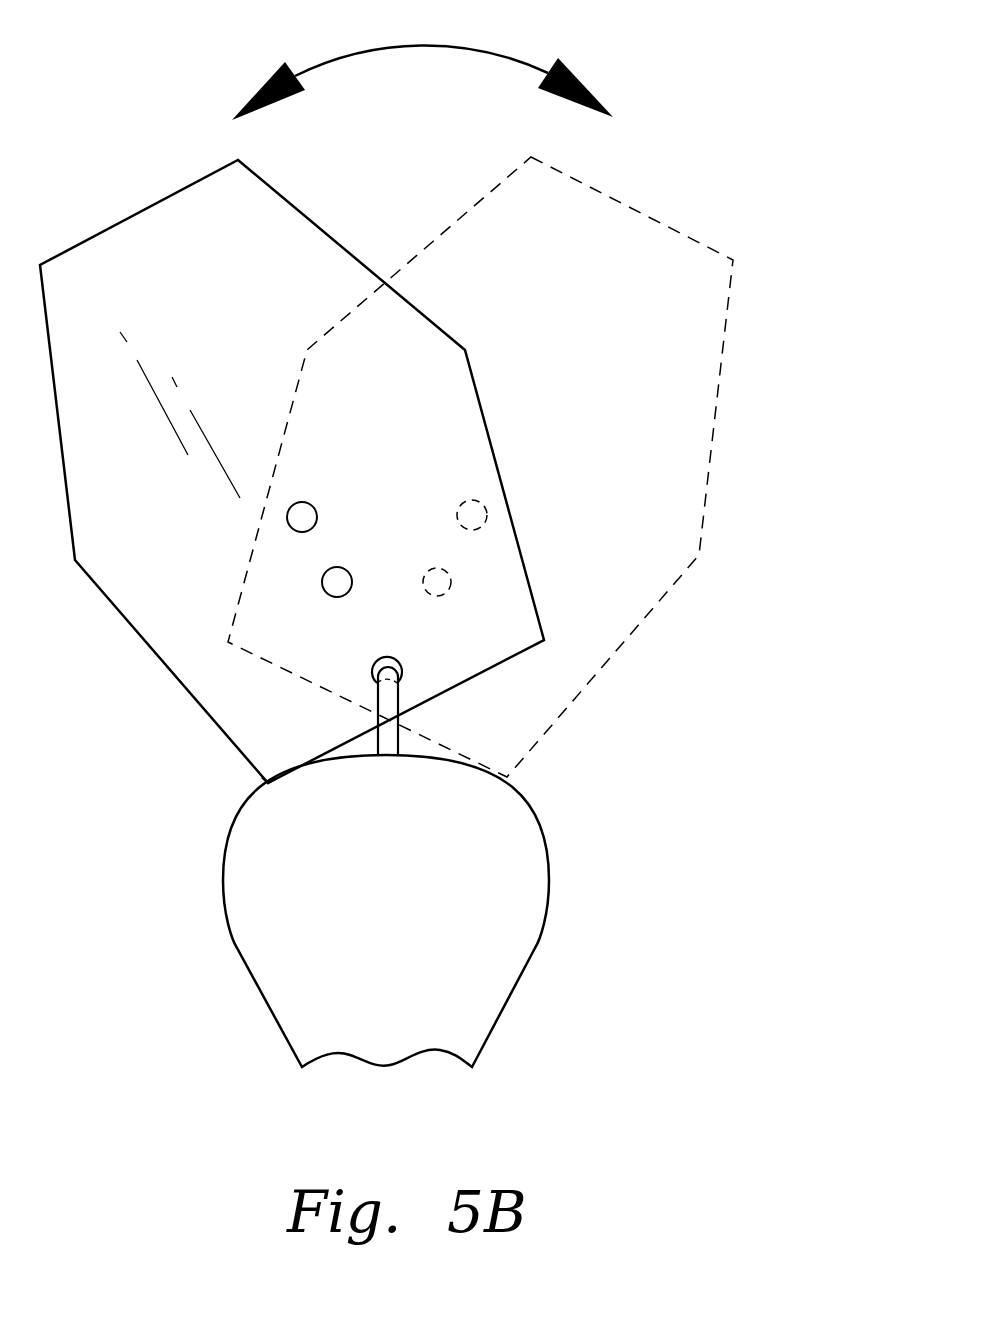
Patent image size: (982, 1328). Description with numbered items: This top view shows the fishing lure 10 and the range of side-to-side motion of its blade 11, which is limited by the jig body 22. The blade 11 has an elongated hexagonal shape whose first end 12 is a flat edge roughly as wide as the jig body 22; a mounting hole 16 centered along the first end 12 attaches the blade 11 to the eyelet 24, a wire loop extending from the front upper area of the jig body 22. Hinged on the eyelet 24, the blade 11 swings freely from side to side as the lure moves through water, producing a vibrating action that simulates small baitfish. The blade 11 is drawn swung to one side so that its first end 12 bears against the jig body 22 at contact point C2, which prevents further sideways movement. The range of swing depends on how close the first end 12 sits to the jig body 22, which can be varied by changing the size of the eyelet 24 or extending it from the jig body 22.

The fishing lure 10 is at (782, 427).
The blade 11 is at (105, 230).
The first end 12 is at (523, 657).
The mounting hole 16 is at (375, 660).
The jig body 22 is at (533, 943).
The eyelet 24 is at (398, 705).
The contact point C2 is at (267, 783).